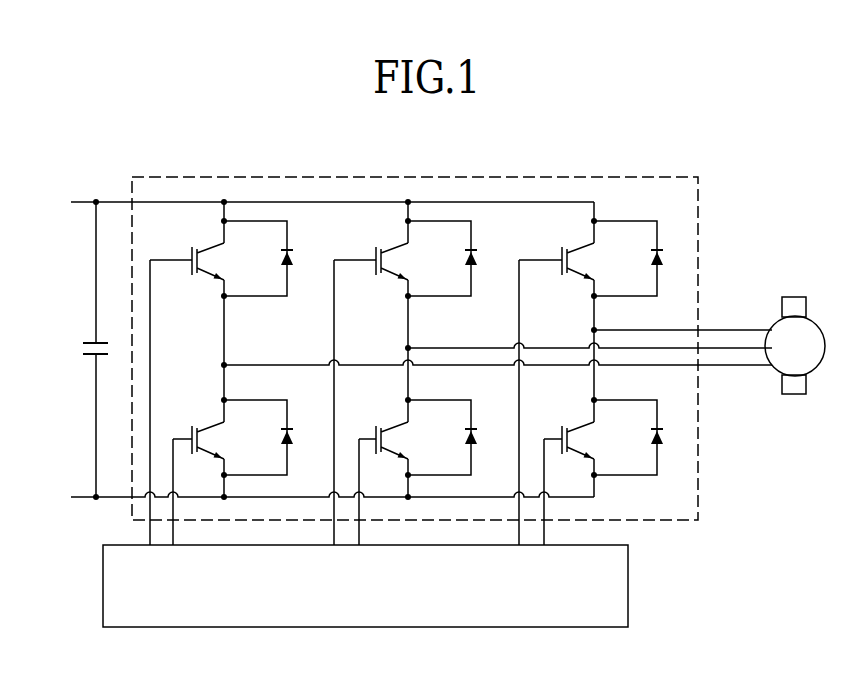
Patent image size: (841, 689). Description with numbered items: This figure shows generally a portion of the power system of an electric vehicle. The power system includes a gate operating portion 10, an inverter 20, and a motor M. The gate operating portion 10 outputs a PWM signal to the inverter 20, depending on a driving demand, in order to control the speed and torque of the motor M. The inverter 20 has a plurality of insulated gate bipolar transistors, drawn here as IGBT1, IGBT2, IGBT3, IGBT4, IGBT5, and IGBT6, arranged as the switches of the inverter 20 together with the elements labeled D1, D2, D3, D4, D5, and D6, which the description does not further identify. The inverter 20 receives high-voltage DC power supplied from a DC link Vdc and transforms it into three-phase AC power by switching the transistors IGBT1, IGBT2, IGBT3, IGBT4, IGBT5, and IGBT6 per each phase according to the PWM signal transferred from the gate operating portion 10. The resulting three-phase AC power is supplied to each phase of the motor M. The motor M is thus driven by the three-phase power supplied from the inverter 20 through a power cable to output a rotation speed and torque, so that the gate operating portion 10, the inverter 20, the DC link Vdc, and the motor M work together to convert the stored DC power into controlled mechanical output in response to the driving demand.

The gate operating portion 10 is at (628, 585).
The inverter 20 is at (698, 482).
The insulated gate bipolar transistor IGBT1 is at (209, 261).
The insulated gate bipolar transistor IGBT2 is at (221, 440).
The insulated gate bipolar transistor IGBT3 is at (393, 261).
The insulated gate bipolar transistor IGBT4 is at (406, 440).
The insulated gate bipolar transistor IGBT5 is at (579, 261).
The insulated gate bipolar transistor IGBT6 is at (591, 440).
The first freewheeling diode D1 is at (300, 261).
The second freewheeling diode D2 is at (300, 440).
The third freewheeling diode D3 is at (484, 261).
The fourth freewheeling diode D4 is at (484, 440).
The fifth freewheeling diode D5 is at (670, 261).
The sixth freewheeling diode D6 is at (670, 440).
The DC link Vdc is at (78, 349).
The motor M is at (795, 345).